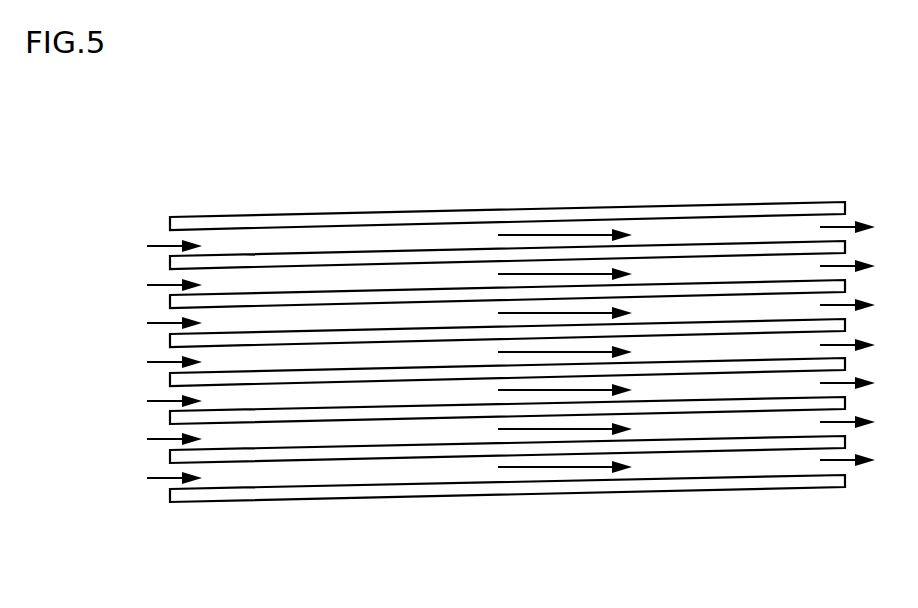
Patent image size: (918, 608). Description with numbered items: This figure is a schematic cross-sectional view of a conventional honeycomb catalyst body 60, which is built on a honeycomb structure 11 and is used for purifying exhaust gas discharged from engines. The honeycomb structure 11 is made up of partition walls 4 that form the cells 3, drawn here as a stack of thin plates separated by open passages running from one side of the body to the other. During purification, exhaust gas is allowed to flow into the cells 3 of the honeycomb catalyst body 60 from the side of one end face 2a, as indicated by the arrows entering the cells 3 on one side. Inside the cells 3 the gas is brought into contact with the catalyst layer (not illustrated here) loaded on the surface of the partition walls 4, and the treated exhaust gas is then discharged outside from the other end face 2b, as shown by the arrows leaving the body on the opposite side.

The end face 2a is at (170, 202).
The end face 2b is at (843, 187).
The cell 3 is at (691, 237).
The partition wall 4 is at (426, 410).
The honeycomb structure 11 is at (511, 332).
The honeycomb catalyst body 60 is at (511, 332).